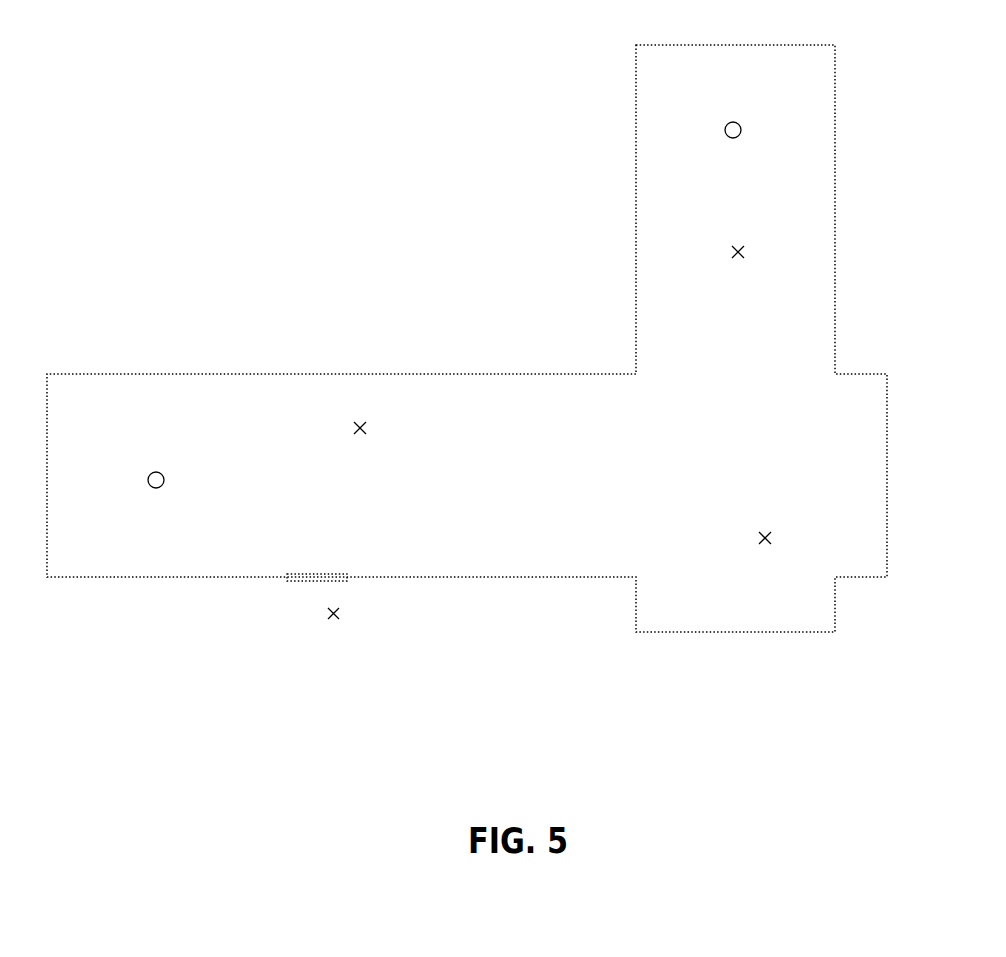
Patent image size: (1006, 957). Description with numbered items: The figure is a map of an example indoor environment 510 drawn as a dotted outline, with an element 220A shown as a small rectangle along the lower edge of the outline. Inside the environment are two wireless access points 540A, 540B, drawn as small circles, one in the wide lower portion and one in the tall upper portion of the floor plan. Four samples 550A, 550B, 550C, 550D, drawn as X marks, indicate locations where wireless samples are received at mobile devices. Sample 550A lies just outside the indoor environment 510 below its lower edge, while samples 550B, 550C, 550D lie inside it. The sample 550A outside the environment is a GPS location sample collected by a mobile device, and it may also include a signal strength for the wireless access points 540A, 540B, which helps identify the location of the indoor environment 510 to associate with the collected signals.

The indoor environment 510 is at (887, 510).
The door / entry 220A is at (322, 574).
The wireless access point 540A is at (177, 476).
The wireless access point 540B is at (740, 139).
The sample 550A is at (345, 612).
The sample 550B is at (372, 425).
The sample 550C is at (774, 518).
The sample 550D is at (745, 268).